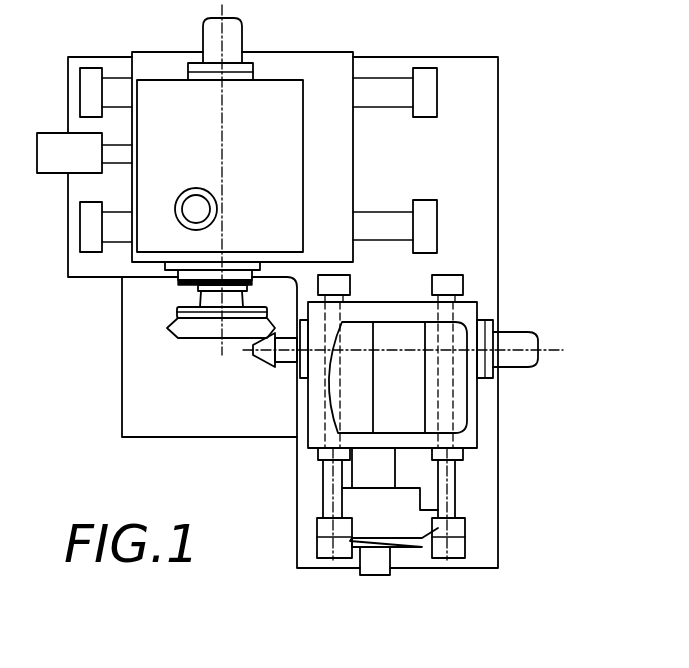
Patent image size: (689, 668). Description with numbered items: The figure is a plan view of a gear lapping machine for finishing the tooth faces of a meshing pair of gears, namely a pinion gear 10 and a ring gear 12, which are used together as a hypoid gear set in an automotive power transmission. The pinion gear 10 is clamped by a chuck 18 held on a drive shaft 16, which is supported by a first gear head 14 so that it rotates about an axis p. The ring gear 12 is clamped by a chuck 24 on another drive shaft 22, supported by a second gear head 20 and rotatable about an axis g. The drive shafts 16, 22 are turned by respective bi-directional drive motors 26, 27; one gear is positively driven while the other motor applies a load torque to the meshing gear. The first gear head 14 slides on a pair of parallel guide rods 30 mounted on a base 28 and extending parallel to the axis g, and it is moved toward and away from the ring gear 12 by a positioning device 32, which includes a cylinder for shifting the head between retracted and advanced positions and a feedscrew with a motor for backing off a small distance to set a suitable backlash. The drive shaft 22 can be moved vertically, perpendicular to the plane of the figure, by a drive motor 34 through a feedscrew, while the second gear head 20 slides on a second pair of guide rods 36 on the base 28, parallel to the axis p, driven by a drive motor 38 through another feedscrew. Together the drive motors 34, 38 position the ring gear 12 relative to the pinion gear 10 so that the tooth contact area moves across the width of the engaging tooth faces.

The pinion gear 10 is at (268, 362).
The ring gear 12 is at (190, 338).
The first gear head 14 is at (470, 435).
The drive shaft 16 is at (295, 380).
The chuck 18 is at (288, 365).
The second gear head 20 is at (168, 87).
The drive shaft 22 is at (190, 283).
The chuck 24 is at (178, 313).
The bi-directional drive motor 26 is at (517, 370).
The bi-directional drive motor 27 is at (235, 38).
The base 28 is at (483, 193).
The guide rods 30 is at (330, 497).
The positioning device 32 is at (398, 588).
The drive motor 34 is at (193, 196).
The guide rods 36 is at (117, 85).
The drive motor 38 is at (50, 140).
The rotation axis g is at (226, 170).
The rotation axis p is at (382, 352).